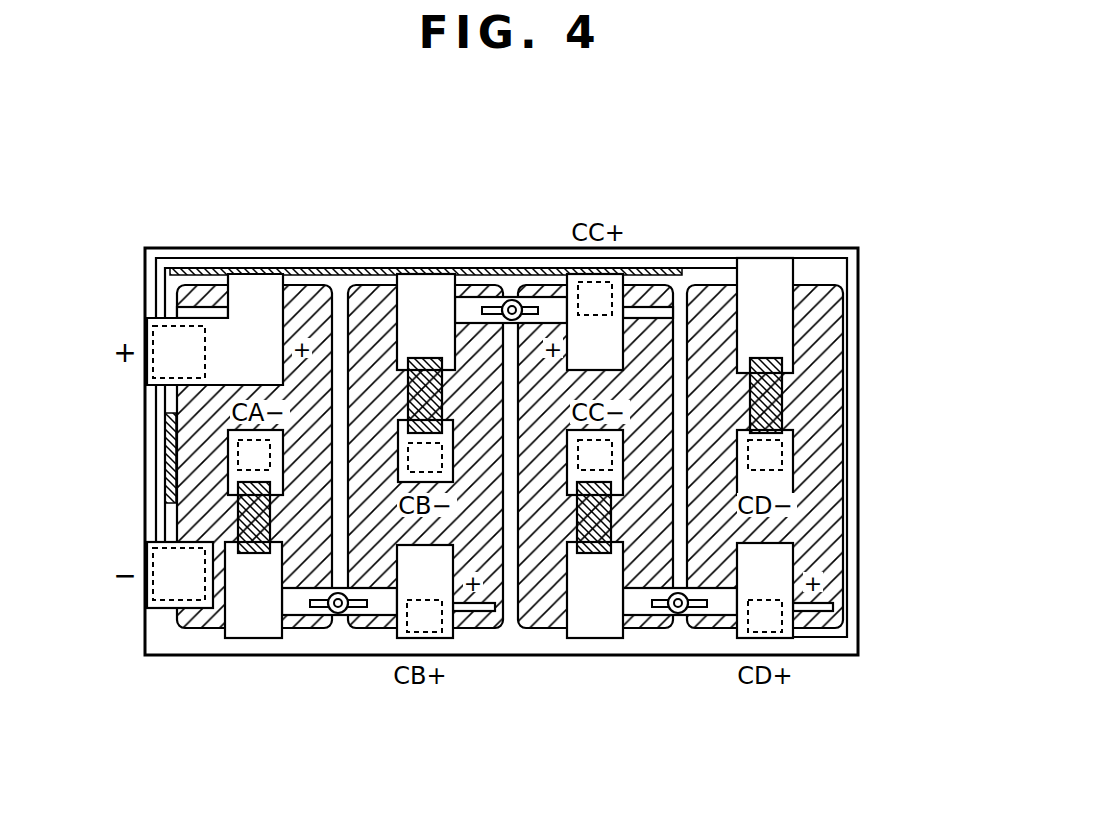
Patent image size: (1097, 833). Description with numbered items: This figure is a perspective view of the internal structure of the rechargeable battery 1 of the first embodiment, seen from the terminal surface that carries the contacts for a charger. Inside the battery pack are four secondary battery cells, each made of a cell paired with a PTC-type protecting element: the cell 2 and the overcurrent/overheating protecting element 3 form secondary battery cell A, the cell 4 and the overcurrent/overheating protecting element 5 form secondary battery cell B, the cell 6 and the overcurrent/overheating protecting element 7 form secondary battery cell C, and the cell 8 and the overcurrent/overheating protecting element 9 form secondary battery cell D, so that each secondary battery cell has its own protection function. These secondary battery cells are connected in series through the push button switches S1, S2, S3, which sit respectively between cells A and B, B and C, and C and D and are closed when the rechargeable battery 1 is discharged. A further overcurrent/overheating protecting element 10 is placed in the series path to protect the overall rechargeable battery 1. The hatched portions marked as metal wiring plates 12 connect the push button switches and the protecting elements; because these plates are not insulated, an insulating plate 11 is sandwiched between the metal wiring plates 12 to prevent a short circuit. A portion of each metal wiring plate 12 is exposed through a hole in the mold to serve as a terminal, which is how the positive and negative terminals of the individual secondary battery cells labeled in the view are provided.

The rechargeable battery 1 is at (172, 248).
The cell 2 is at (300, 320).
The overcurrent/overheating protecting element 3 is at (257, 555).
The cell 4 is at (375, 300).
The overcurrent/overheating protecting element 5 is at (430, 358).
The cell 6 is at (648, 320).
The overcurrent/overheating protecting element 7 is at (595, 555).
The cell 8 is at (823, 303).
The overcurrent/overheating protecting element 9 is at (768, 357).
The overcurrent/overheating protecting element 10 is at (170, 456).
The insulating plate 11 is at (338, 268).
The metal wiring plate 12 is at (245, 290).
The push button switch S1 is at (338, 613).
The push button switch S2 is at (510, 300).
The push button switch S3 is at (678, 613).